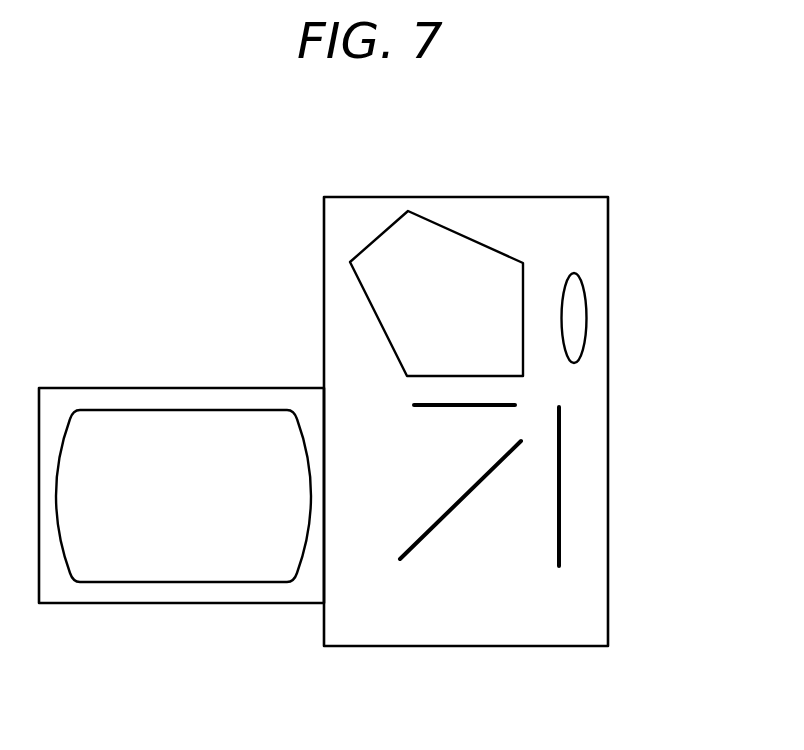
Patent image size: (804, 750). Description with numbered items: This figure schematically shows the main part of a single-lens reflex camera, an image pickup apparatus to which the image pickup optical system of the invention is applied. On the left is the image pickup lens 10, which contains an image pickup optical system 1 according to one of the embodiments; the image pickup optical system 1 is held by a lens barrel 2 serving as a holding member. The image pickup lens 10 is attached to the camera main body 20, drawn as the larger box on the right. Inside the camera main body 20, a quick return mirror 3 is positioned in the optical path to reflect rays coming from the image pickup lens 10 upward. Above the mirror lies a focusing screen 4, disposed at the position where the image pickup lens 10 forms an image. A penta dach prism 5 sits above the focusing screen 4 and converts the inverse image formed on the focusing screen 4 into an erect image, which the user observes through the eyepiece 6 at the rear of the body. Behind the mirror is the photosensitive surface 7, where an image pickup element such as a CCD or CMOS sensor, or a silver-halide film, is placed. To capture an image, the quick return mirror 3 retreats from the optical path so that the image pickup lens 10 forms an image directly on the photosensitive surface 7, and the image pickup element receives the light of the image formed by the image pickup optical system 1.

The image pickup optical system 1 is at (150, 410).
The lens barrel 2 is at (177, 604).
The quick return mirror 3 is at (450, 515).
The focusing screen 4 is at (438, 407).
The penta dach prism 5 is at (378, 236).
The eyepiece 6 is at (585, 293).
The photosensitive surface 7 is at (559, 463).
The image pickup lens 10 is at (218, 380).
The camera main body 20 is at (504, 186).